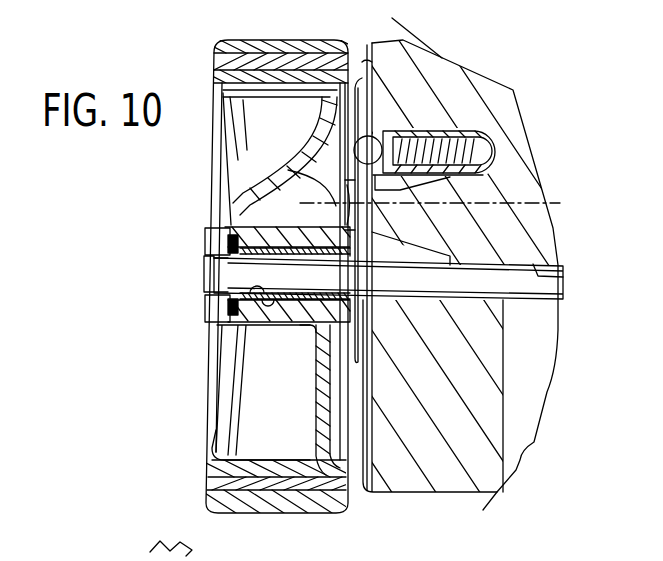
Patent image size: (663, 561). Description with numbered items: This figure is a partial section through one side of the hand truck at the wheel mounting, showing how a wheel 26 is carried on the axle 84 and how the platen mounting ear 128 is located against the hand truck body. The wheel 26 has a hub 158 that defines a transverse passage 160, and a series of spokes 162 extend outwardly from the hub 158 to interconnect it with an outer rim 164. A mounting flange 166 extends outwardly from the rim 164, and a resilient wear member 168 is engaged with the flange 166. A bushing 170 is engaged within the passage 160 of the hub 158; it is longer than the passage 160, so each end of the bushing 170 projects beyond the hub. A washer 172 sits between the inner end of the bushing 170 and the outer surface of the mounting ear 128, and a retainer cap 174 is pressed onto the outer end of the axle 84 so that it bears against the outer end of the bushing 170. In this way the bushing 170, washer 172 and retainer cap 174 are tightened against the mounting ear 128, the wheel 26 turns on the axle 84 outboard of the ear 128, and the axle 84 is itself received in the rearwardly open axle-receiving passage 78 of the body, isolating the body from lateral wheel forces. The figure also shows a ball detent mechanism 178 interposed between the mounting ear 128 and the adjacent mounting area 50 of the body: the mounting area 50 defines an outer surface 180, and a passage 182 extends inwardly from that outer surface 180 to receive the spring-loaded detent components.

The wheel 26 is at (206, 437).
The mounting area 50 is at (371, 64).
The axle-receiving passage 78 is at (560, 274).
The axle 84 is at (208, 300).
The mounting ear 128 is at (316, 342).
The hub 158 is at (217, 330).
The transverse passage 160 is at (257, 302).
The spokes 162 is at (288, 160).
The outer rim 164 is at (208, 457).
The mounting flange 166 is at (278, 497).
The resilient wear member 168 is at (207, 498).
The bushing 170 is at (204, 272).
The washer 172 is at (340, 215).
The retainer cap 174 is at (206, 250).
The ball detent mechanism 178 is at (428, 124).
The outer surface 180 is at (357, 86).
The passage 182 is at (478, 134).